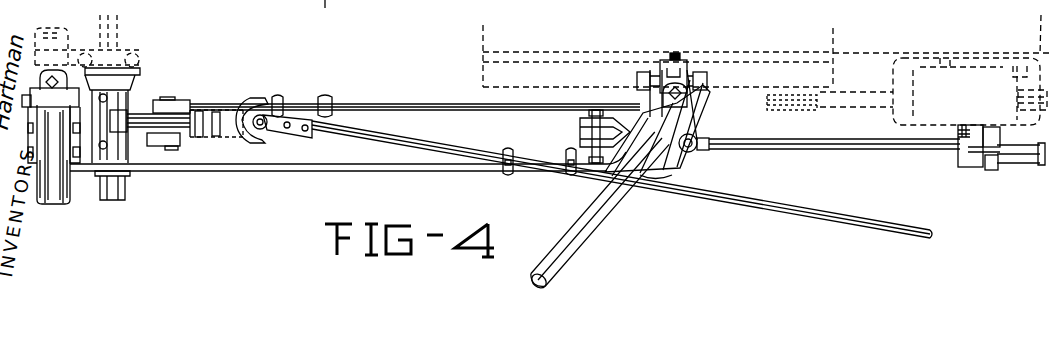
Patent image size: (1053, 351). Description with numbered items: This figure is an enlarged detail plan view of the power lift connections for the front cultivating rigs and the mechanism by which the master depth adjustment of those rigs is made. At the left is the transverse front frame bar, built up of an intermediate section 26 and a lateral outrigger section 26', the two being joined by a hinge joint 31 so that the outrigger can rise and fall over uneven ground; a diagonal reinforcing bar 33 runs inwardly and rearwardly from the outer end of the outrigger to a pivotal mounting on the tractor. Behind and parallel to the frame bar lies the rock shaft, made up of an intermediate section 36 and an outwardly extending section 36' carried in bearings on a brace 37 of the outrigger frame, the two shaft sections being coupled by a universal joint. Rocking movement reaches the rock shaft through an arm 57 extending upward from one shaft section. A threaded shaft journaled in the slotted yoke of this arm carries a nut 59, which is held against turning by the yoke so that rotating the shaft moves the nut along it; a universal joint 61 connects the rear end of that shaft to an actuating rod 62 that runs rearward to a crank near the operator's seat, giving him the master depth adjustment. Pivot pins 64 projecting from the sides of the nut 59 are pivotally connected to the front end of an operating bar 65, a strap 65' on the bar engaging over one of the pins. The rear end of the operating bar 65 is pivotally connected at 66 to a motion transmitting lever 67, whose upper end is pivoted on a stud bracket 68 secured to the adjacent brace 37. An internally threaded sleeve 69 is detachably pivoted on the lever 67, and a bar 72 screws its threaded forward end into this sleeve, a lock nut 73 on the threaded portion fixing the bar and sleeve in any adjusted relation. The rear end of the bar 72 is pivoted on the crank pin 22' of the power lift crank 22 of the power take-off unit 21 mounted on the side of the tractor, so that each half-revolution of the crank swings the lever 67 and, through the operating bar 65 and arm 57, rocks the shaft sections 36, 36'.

The power take-off unit 21 is at (965, 58).
The power lift crank 22 is at (969, 151).
The crank pin 22' is at (1006, 178).
The intermediate section 26 is at (86, 33).
The lateral outrigger section 26' is at (58, 206).
The hinge joint 31 is at (62, 86).
The diagonal reinforcing bar 33 is at (594, 233).
The intermediate rock shaft section 36 is at (121, 89).
The outer rock shaft section 36' is at (124, 200).
The brace 37 is at (404, 165).
The arm 57 is at (143, 118).
The nut 59 is at (165, 141).
The universal joint 61 is at (270, 127).
The actuating rod 62 is at (441, 148).
The pivot pin 64 is at (172, 99).
The operating bar 65 is at (415, 98).
The strap 65' is at (245, 132).
The pivotal connection 66 is at (642, 176).
The motion transmitting lever 67 is at (640, 120).
The stud bracket 68 is at (583, 128).
The internally threaded sleeve 69 is at (684, 152).
The bar 72 is at (840, 149).
The lock nut 73 is at (705, 150).